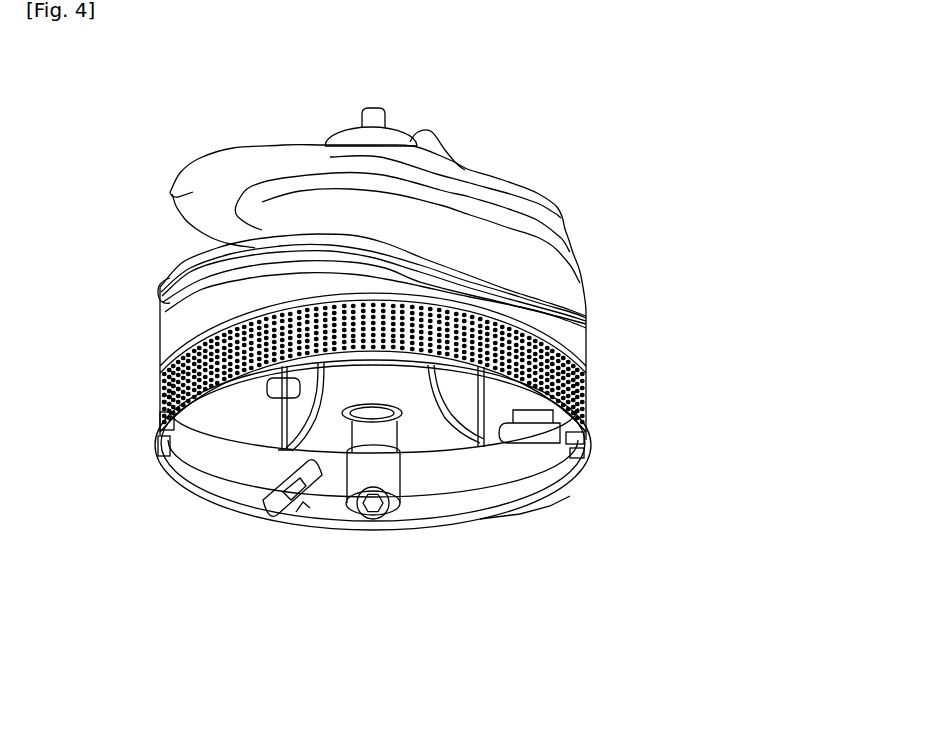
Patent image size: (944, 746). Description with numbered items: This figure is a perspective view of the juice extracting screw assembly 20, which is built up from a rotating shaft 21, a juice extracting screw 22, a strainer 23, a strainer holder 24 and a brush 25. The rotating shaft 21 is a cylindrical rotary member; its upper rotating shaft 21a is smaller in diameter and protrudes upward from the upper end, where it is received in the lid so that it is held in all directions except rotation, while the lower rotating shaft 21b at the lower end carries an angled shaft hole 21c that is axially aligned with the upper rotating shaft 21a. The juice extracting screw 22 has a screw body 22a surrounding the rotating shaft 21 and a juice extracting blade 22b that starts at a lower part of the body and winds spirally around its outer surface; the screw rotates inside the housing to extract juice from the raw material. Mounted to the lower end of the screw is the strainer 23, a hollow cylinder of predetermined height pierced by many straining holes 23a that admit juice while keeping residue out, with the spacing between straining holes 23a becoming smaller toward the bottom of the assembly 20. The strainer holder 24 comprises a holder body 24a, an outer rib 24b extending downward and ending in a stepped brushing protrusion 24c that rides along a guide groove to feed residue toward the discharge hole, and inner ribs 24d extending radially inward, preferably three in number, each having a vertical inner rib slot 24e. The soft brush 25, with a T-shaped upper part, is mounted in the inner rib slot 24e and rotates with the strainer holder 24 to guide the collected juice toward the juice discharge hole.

The juice extracting screw assembly 20 is at (122, 66).
The rotating shaft 21 is at (686, 462).
The upper rotating shaft 21a is at (373, 108).
The lower rotating shaft 21b is at (580, 407).
The angled shaft hole 21c is at (582, 453).
The juice extracting screw 22 is at (82, 185).
The screw body 22a is at (237, 210).
The juice extracting blade 22b is at (170, 192).
The strainer 23 is at (163, 362).
The straining hole 23a is at (163, 390).
The strainer holder 24 is at (503, 610).
The holder body 24a is at (160, 436).
The outer rib 24b is at (382, 520).
The brushing protrusion 24c is at (537, 497).
The inner rib 24d is at (290, 483).
The inner rib slot 24e is at (300, 508).
The brush 25 is at (303, 507).